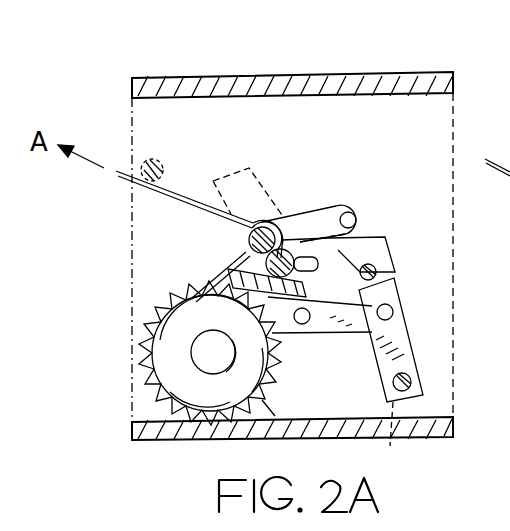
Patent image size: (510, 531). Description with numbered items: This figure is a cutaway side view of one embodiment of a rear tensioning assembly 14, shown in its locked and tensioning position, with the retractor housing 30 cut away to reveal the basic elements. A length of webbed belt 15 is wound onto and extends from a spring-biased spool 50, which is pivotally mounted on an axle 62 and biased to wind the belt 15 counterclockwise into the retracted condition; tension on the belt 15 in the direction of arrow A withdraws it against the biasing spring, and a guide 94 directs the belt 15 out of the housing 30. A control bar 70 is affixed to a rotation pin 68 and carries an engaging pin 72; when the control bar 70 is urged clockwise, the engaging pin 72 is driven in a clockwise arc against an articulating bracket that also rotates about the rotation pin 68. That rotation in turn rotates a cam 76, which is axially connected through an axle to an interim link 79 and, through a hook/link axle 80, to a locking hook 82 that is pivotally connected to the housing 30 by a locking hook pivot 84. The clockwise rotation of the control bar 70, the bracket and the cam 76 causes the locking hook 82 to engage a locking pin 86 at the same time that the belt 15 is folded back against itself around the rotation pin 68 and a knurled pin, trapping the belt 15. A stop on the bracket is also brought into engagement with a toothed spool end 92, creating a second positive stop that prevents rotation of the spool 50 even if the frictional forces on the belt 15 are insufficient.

The tensioning assembly 14 is at (282, 50).
The belt 15 is at (134, 181).
The housing 30 is at (216, 78).
The spool 50 is at (170, 353).
The axle 62 is at (213, 360).
The rotation pin 68 is at (250, 239).
The control bar 70 is at (333, 203).
The engaging pin 72 is at (358, 220).
The cam 76 is at (252, 175).
The interim link 79 is at (340, 338).
The hook/link axle 80 is at (393, 312).
The locking hook 82 is at (392, 437).
The locking hook pivot 84 is at (412, 382).
The locking pin 86 is at (378, 272).
The toothed spool end 92 is at (262, 405).
The guide 94 is at (165, 166).